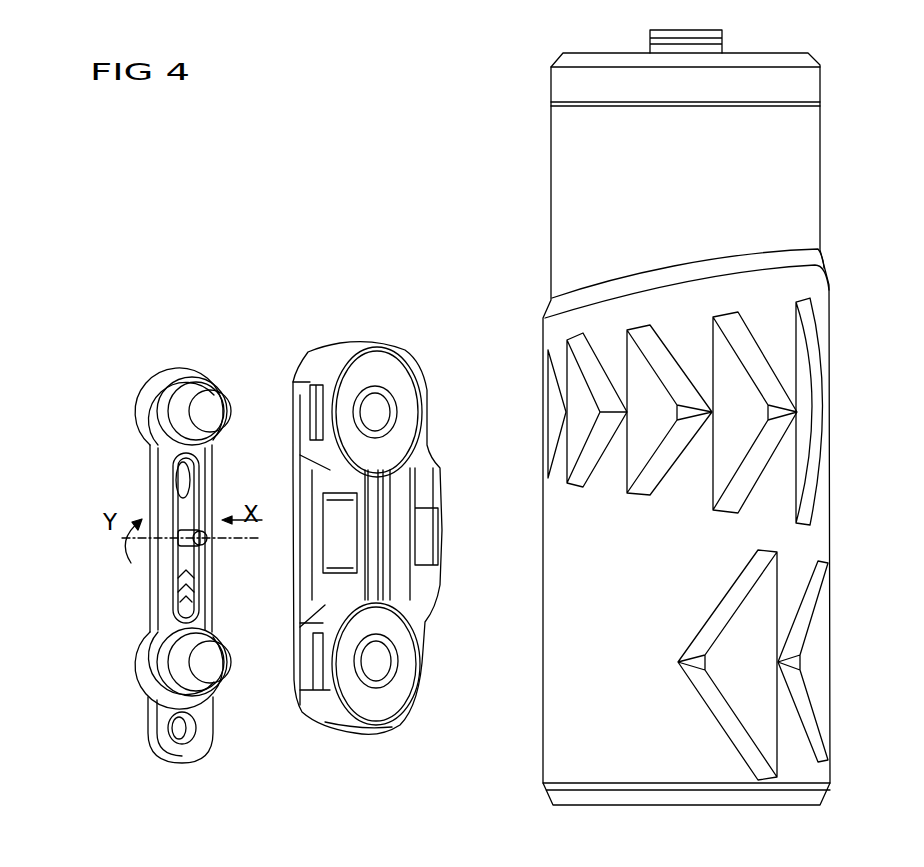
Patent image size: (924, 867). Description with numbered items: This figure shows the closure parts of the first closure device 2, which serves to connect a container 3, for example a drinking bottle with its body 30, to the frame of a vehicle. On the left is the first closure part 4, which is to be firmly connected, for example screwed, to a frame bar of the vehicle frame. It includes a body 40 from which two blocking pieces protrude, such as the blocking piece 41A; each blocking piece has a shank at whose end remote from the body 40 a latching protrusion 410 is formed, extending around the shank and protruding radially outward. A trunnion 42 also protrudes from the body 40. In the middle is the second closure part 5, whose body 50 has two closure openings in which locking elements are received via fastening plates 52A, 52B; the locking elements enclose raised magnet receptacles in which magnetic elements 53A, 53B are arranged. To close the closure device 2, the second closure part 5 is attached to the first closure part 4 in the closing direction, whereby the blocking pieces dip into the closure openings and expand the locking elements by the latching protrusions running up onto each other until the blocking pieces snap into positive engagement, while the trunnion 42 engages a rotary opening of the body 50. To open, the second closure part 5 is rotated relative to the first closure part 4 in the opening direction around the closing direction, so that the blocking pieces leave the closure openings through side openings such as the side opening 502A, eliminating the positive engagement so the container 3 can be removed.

The first closure device 2 is at (307, 256).
The container 3 is at (720, 417).
The body of the container 30 is at (820, 532).
The first closure part 4 is at (178, 777).
The body of the first closure part 40 is at (223, 680).
The blocking piece 41A is at (215, 420).
The latching protrusion 410 is at (204, 386).
The trunnion 42 is at (204, 541).
The second closure part 5 is at (369, 567).
The body of the second closure part 50 is at (440, 588).
The side opening 502A is at (292, 398).
The fastening plate 52A is at (409, 416).
The fastening plate 52B is at (407, 660).
The magnetic element 53A is at (382, 406).
The magnetic element 53B is at (381, 680).